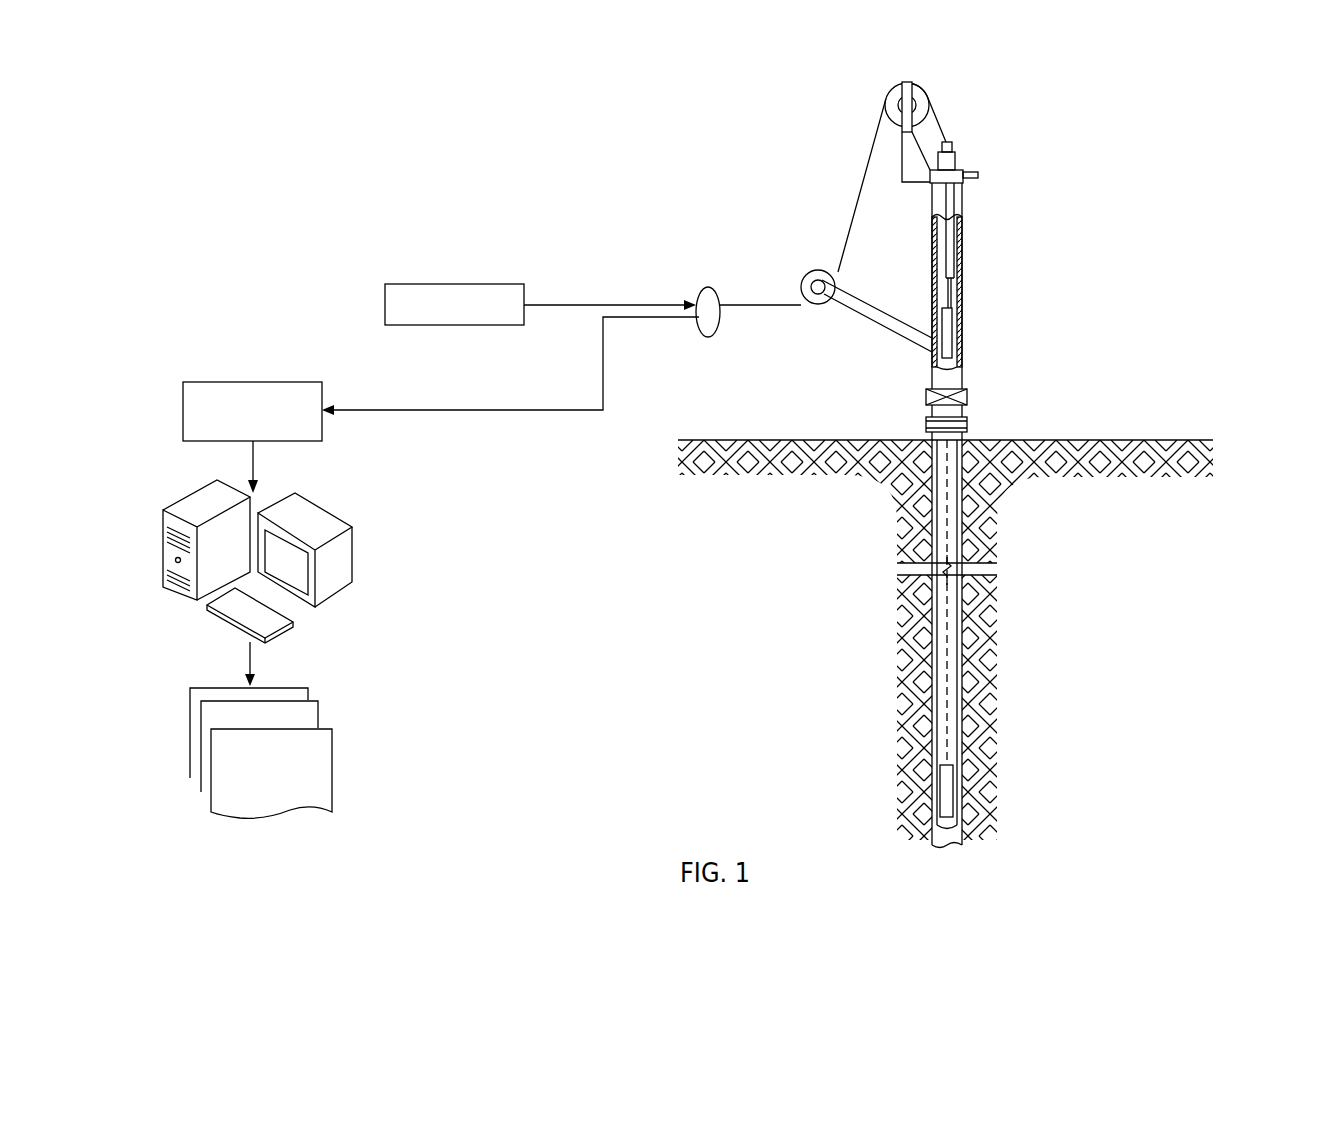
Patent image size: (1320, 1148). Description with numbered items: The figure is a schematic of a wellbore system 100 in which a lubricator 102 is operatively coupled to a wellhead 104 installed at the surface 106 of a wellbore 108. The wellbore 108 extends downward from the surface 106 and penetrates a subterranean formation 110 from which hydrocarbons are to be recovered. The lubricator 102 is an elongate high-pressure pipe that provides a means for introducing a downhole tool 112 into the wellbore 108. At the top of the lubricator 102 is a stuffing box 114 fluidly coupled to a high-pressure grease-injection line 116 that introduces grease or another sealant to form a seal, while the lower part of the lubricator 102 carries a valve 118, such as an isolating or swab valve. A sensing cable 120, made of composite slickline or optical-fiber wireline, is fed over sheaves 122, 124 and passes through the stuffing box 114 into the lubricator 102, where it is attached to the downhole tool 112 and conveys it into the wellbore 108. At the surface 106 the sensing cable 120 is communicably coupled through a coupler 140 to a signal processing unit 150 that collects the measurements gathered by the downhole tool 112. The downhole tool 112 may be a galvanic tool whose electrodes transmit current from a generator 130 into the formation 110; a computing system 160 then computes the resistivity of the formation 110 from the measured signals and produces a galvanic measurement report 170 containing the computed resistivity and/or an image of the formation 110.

The wellbore system 100 is at (1056, 170).
The lubricator 102 is at (932, 262).
The wellhead 104 is at (964, 436).
The surface 106 is at (1076, 440).
The wellbore 108 is at (937, 515).
The subterranean formation 110 is at (790, 545).
The downhole tool 112 is at (951, 331).
The stuffing box 114 is at (956, 160).
The high-pressure grease-injection line 116 is at (974, 179).
The valve 118 is at (975, 397).
The sensing cable 120 is at (944, 118).
The sheave 122 is at (820, 271).
The sheave 124 is at (888, 113).
The generator 130 is at (493, 283).
The coupler 140 is at (700, 287).
The signal processing unit 150 is at (308, 382).
The computing system 160 is at (350, 519).
The galvanic measurement report 170 is at (332, 738).